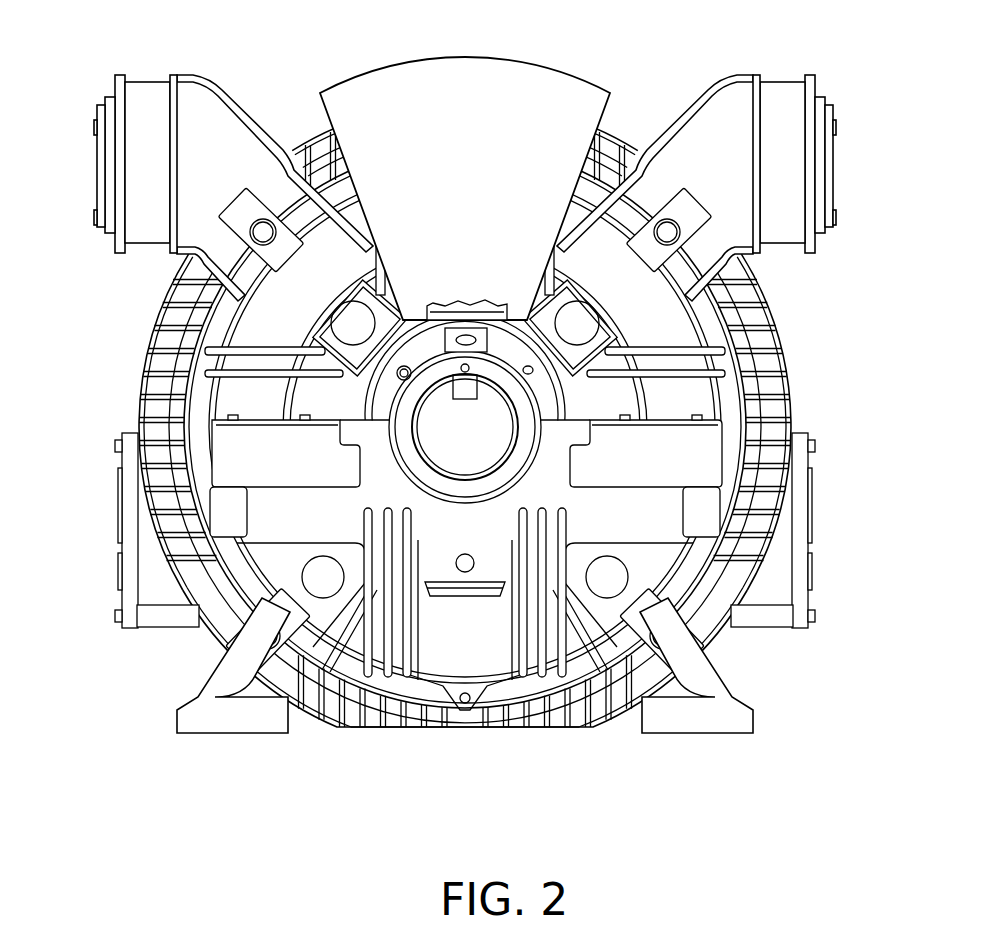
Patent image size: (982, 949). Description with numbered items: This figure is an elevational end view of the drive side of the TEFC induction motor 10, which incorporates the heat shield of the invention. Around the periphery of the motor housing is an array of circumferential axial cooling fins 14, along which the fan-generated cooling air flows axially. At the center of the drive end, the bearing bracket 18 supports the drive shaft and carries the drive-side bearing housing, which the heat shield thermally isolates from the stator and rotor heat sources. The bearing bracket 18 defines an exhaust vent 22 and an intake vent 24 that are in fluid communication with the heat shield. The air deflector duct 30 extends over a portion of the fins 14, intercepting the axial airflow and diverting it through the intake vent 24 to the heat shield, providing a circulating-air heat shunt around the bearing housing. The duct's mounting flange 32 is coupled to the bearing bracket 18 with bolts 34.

The TEFC induction motor 10 is at (98, 299).
The cooling fins 14 is at (783, 352).
The bearing bracket 18 is at (300, 396).
The exhaust vent 22 is at (470, 600).
The intake vent 24 is at (466, 308).
The air deflector duct 30 is at (530, 76).
The mounting flange 32 is at (590, 303).
The bolts 34 is at (527, 319).